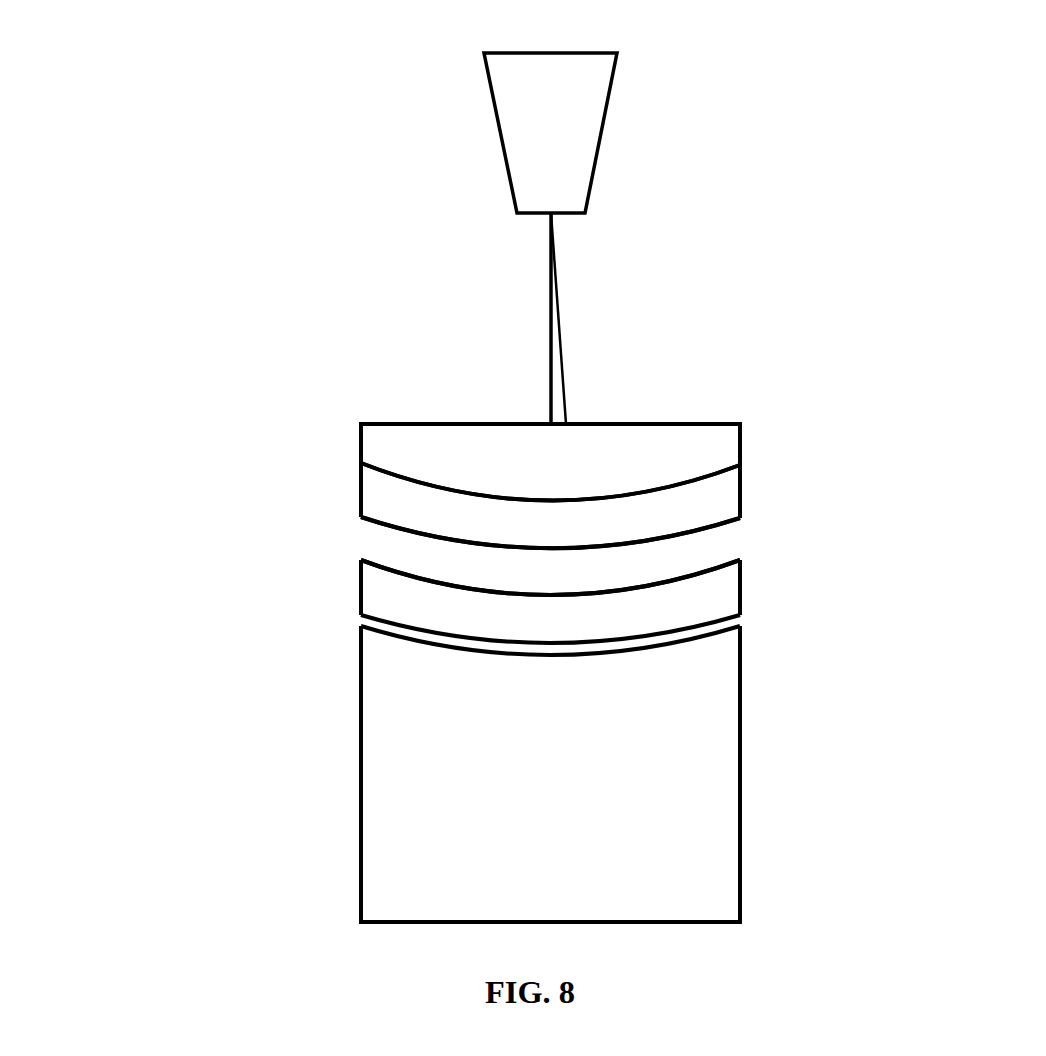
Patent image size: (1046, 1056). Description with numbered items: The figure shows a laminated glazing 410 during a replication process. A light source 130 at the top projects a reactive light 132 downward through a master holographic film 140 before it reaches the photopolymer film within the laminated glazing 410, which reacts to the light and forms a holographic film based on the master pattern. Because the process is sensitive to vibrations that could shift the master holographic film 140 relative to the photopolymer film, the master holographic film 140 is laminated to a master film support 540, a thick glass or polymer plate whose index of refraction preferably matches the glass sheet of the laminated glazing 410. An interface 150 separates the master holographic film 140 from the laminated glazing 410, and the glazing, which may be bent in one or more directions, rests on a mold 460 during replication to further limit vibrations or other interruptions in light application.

The light source 130 is at (552, 135).
The reactive light 132 is at (551, 373).
The master holographic film 140 is at (715, 498).
The interface 150 is at (715, 547).
The laminated glazing 410 is at (383, 593).
The mold 460 is at (385, 789).
The master film support 540 is at (627, 442).